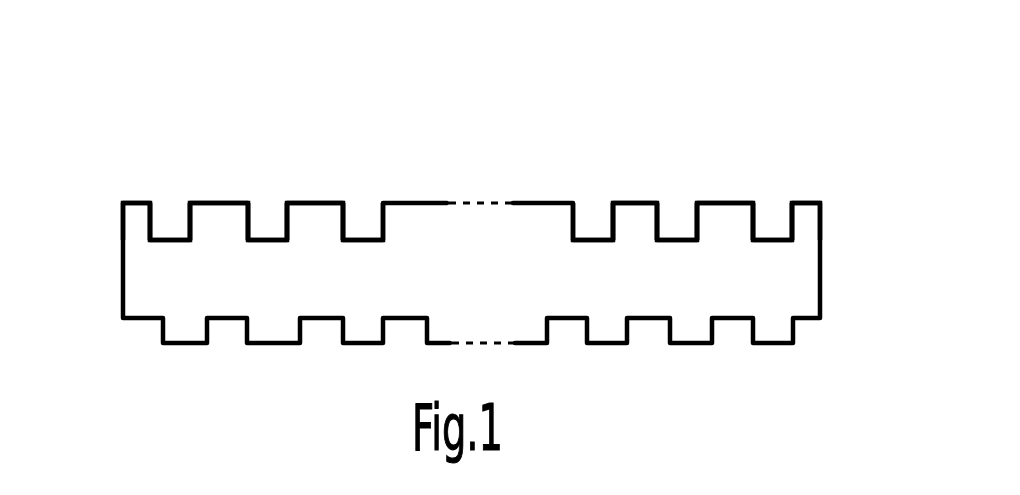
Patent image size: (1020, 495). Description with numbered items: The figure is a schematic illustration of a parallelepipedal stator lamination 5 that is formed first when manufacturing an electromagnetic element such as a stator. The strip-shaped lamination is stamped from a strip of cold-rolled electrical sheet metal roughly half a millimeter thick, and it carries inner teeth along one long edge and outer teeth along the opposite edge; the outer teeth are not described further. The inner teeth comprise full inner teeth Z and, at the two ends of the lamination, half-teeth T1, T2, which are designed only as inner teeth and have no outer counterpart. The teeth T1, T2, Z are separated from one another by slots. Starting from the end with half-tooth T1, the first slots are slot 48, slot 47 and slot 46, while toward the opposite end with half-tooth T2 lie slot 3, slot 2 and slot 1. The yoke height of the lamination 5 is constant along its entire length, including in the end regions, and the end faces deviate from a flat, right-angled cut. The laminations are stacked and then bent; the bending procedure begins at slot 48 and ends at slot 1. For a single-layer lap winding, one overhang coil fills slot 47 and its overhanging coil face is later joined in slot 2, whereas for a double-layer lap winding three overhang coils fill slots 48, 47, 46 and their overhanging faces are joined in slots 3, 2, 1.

The slot 1 is at (773, 223).
The slot 2 is at (682, 227).
The slot 3 is at (593, 237).
The stator lamination 5 is at (150, 290).
The slot 46 is at (365, 230).
The slot 47 is at (269, 223).
The slot 48 is at (168, 237).
The half-tooth T1 is at (137, 210).
The half-tooth T2 is at (805, 223).
The inner tooth Z is at (230, 222).